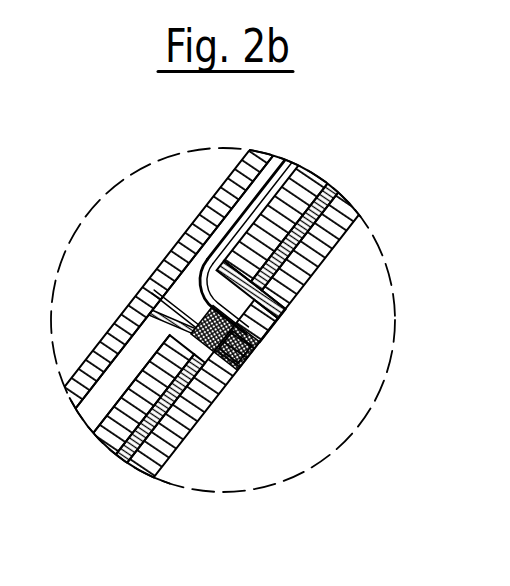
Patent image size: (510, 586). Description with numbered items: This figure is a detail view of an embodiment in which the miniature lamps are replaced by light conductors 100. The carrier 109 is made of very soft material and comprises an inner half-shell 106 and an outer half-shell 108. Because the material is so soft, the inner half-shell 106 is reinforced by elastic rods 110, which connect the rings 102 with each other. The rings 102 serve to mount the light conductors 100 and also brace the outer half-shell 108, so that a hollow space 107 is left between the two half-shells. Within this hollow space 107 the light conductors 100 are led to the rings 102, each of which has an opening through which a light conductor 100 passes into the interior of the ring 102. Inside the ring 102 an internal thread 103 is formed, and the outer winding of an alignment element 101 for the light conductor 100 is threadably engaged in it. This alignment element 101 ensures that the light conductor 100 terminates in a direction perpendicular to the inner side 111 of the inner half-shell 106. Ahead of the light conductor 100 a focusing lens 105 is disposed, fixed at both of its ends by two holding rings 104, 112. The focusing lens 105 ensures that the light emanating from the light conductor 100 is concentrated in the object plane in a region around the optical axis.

The light conductor 100 is at (226, 184).
The alignment element 101 is at (157, 263).
The ring 102 is at (291, 293).
The internal thread 103 is at (151, 288).
The holding ring 104 is at (252, 356).
The focusing lens 105 is at (300, 355).
The inner half-shell 106 is at (178, 453).
The hollow space 107 is at (107, 403).
The outer half-shell 108 is at (117, 326).
The carrier 109 is at (327, 183).
The elastic rod 110 is at (328, 184).
The inner side 111 is at (343, 237).
The holding ring 112 is at (270, 330).